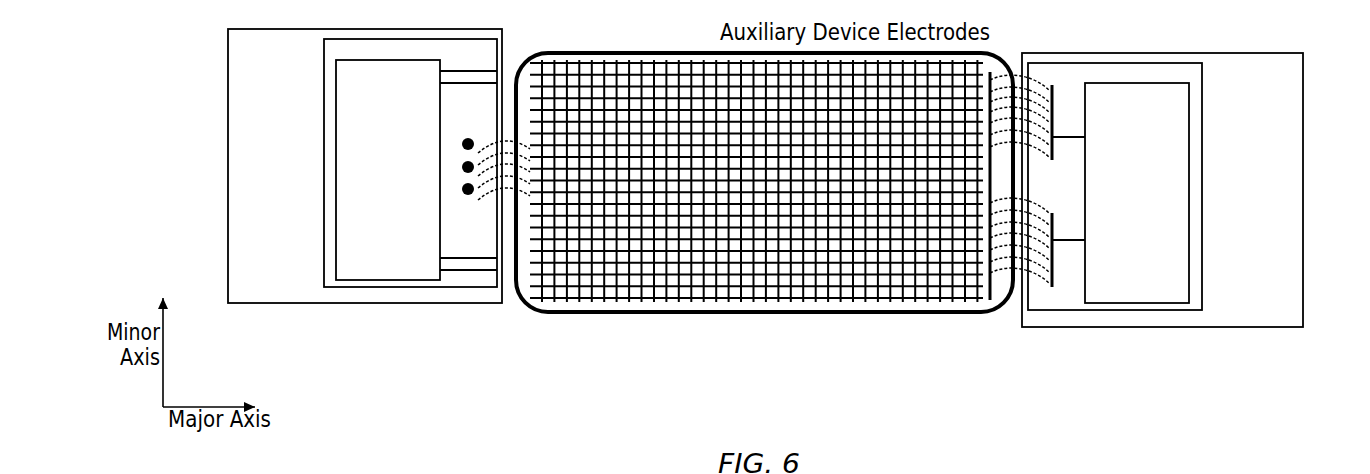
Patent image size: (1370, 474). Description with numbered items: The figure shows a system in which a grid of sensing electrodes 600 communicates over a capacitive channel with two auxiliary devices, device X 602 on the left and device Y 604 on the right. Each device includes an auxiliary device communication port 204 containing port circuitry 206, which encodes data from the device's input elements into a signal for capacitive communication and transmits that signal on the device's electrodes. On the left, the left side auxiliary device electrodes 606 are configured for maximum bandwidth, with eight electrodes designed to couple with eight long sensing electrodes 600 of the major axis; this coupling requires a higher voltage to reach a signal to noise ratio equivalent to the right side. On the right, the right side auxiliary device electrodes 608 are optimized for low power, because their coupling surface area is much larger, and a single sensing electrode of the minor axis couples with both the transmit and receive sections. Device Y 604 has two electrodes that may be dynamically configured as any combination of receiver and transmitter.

The device X 602 is at (365, 166).
The device Y 604 is at (1162, 190).
The port circuitry 206 is at (762, 181).
The auxiliary device communication port 204 is at (411, 289).
The left side auxiliary device electrodes 606 is at (467, 284).
The sensing electrodes 600 is at (731, 285).
The right side auxiliary device electrodes 608 is at (1050, 88).